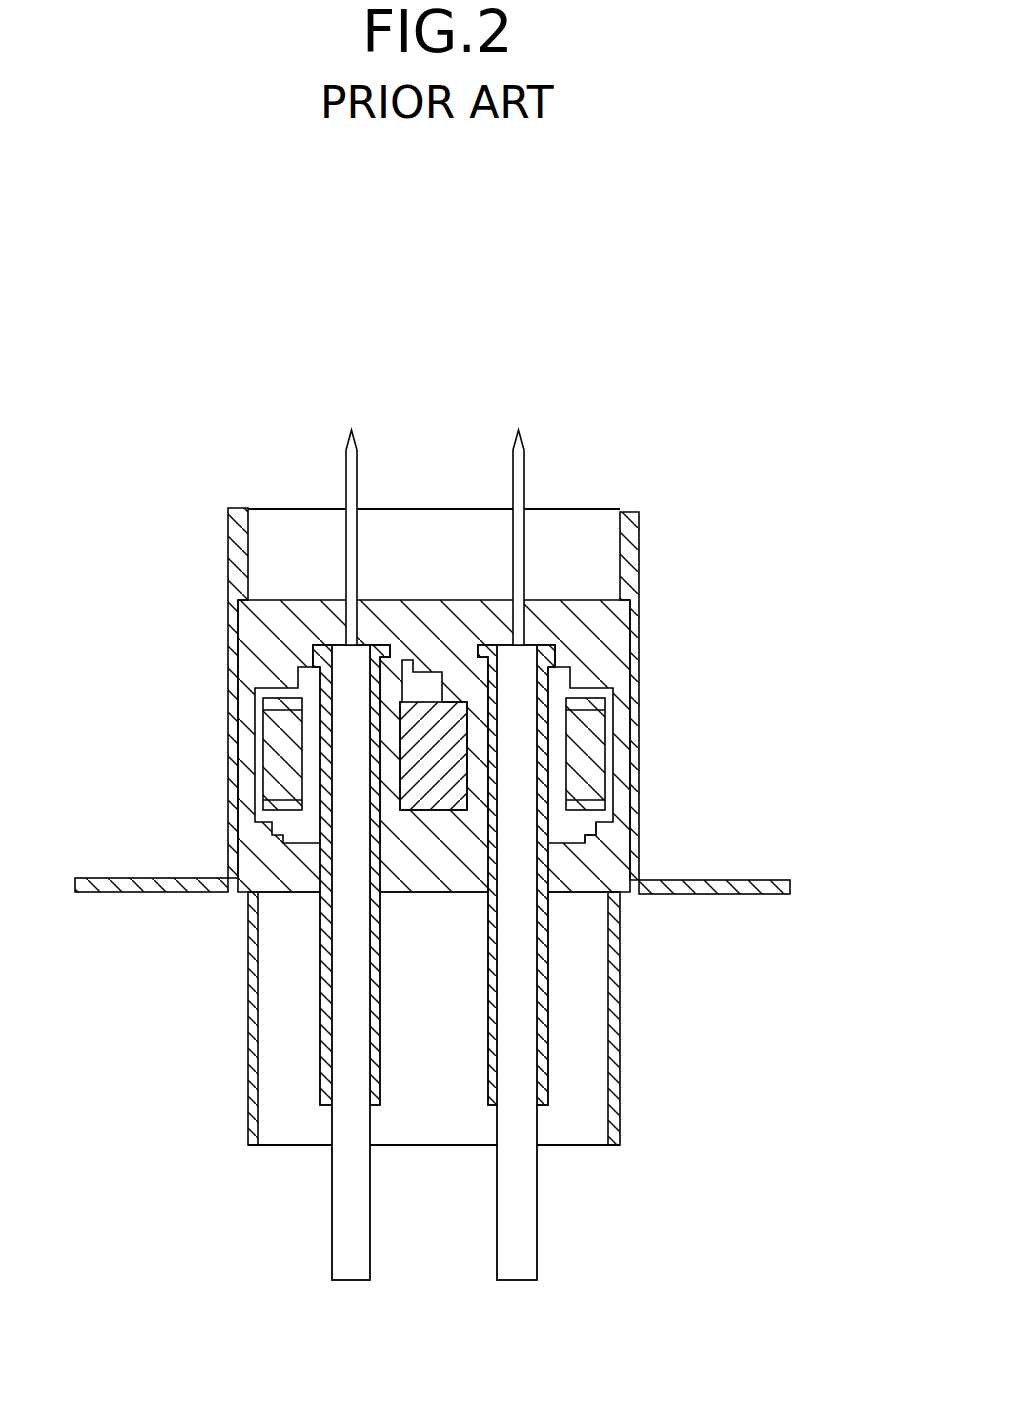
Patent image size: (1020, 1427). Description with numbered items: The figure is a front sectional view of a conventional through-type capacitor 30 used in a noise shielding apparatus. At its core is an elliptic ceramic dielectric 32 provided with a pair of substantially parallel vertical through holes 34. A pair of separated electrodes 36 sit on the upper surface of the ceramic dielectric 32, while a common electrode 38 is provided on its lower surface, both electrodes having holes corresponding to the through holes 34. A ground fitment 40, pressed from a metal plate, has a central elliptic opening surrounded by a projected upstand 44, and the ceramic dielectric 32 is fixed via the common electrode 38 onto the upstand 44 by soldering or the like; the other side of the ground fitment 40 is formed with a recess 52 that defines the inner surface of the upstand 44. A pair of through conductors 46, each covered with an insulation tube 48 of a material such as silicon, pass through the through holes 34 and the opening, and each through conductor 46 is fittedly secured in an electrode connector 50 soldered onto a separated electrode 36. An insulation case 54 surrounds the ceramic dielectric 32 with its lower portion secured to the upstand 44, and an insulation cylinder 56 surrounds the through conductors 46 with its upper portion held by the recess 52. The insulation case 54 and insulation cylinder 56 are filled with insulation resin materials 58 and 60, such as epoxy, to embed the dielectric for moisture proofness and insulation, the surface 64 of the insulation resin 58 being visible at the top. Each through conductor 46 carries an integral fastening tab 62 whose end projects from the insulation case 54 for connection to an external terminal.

The through-type capacitor 30 is at (592, 472).
The ceramic dielectric 32 is at (287, 770).
The through hole 34 is at (303, 857).
The separated electrode 36 is at (265, 717).
The common electrode 38 is at (283, 797).
The ground fitment 40 is at (155, 893).
The upstand 44 is at (619, 830).
The through conductor 46 is at (338, 1207).
The insulation tube 48 is at (323, 1075).
The electrode connector 50 is at (283, 672).
The recess 52 is at (607, 877).
The insulation case 54 is at (638, 530).
The insulation cylinder 56 is at (613, 1080).
The insulation resin material 58 is at (423, 608).
The insulation resin material 60 is at (420, 895).
The fastening tab 62 is at (350, 476).
The surface of the insulation resin 64 is at (286, 586).